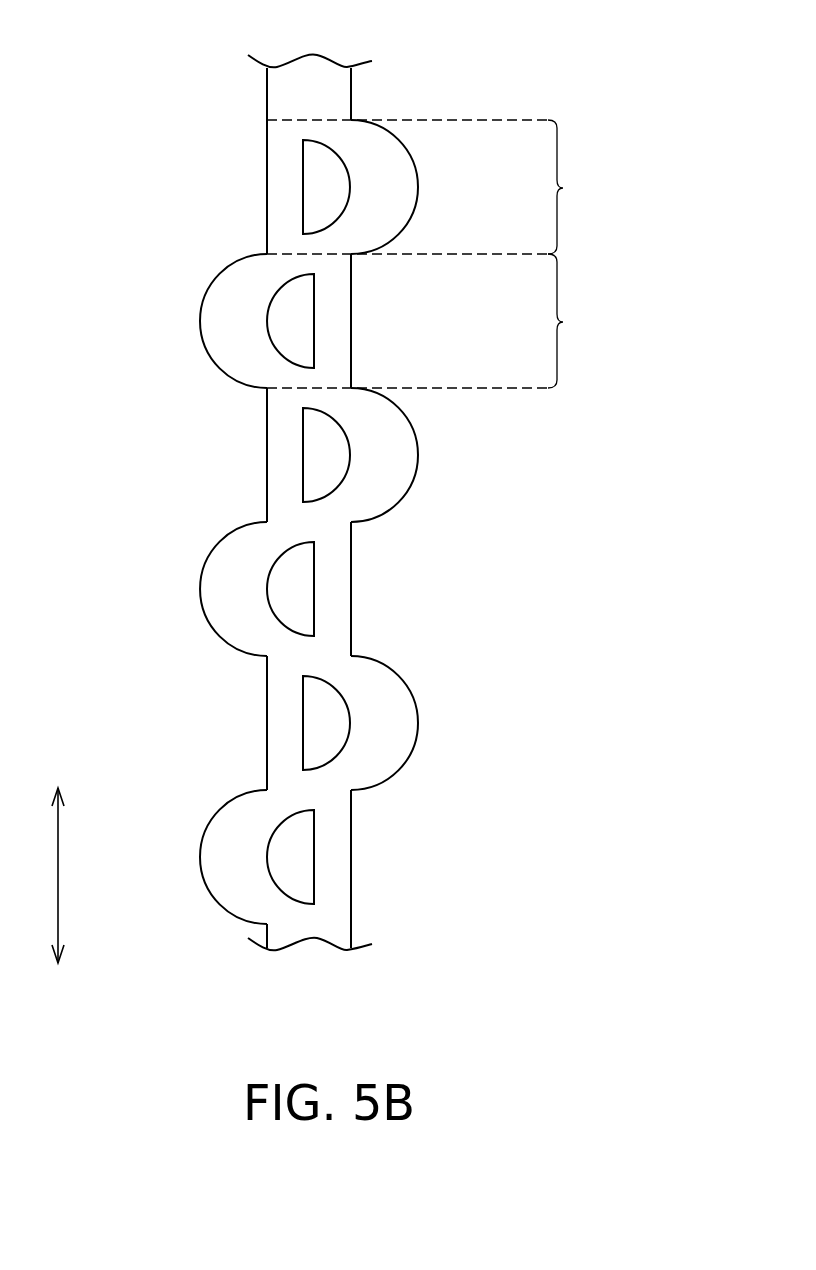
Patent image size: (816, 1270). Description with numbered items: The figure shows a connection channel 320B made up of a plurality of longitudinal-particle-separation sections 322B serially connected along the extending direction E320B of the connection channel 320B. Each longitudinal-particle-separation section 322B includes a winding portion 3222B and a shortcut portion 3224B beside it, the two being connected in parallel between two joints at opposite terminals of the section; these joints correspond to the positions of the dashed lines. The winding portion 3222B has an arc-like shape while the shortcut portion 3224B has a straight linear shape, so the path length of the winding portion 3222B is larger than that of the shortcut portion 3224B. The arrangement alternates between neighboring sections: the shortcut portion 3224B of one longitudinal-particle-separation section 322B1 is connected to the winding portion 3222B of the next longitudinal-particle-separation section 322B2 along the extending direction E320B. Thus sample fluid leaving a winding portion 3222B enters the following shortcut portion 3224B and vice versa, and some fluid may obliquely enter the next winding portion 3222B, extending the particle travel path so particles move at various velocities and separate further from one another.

The connection channel 320B is at (401, 513).
The longitudinal-particle-separation section 322B is at (492, 254).
The longitudinal-particle-separation section 322B1 is at (492, 187).
The next longitudinal-particle-separation section 322B2 is at (492, 321).
The winding portion 3222B is at (417, 172).
The shortcut portion 3224B is at (303, 178).
The extending direction E320B is at (96, 875).